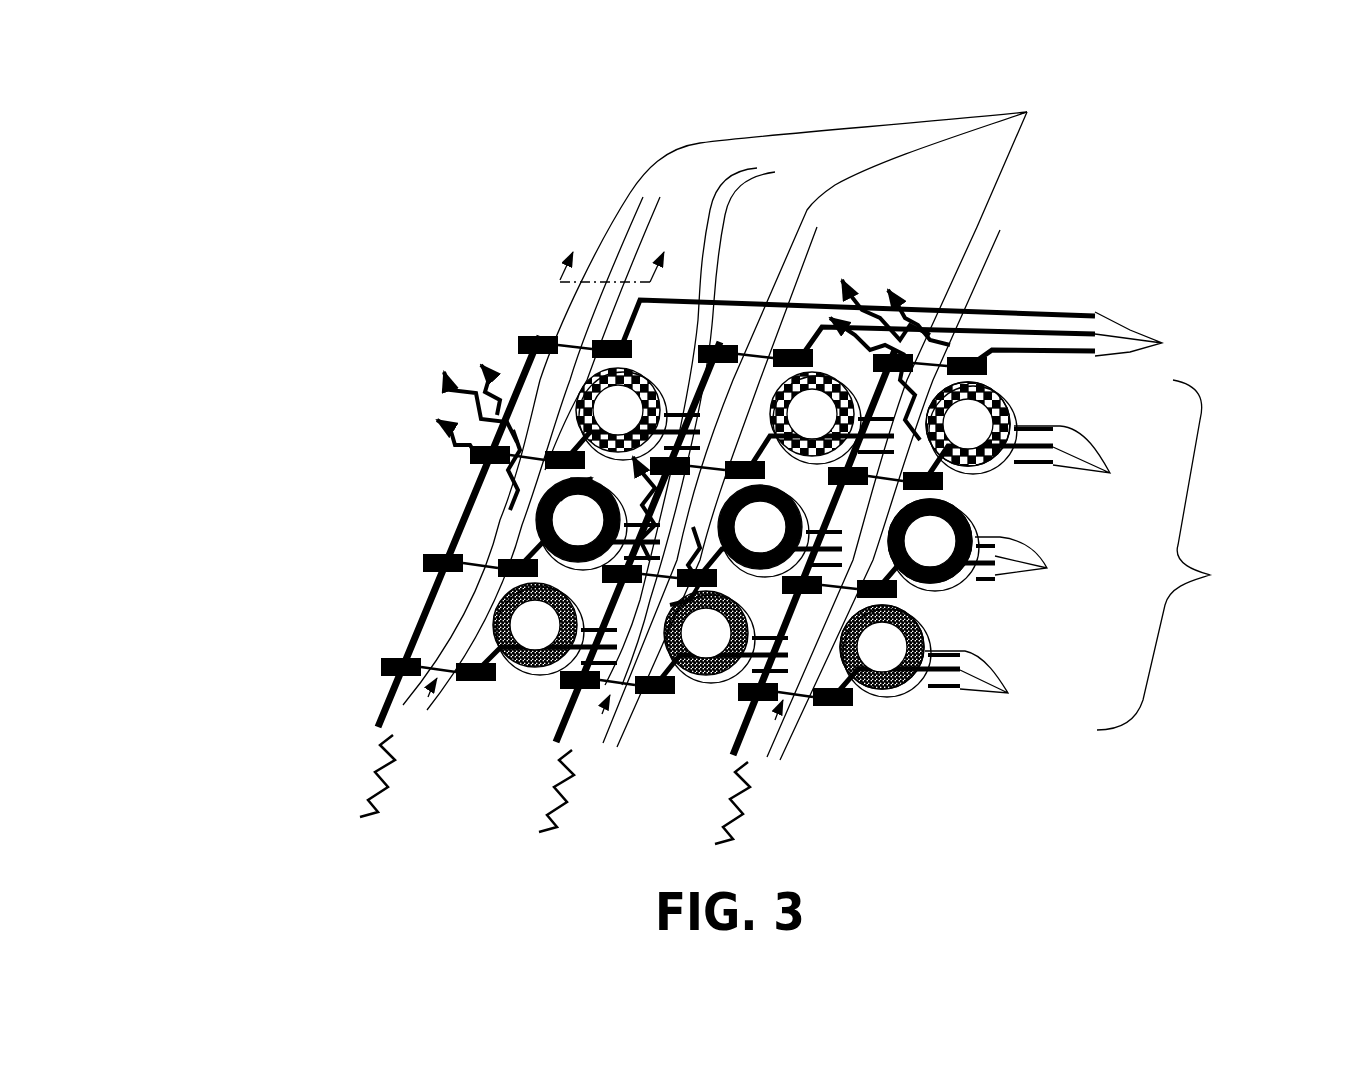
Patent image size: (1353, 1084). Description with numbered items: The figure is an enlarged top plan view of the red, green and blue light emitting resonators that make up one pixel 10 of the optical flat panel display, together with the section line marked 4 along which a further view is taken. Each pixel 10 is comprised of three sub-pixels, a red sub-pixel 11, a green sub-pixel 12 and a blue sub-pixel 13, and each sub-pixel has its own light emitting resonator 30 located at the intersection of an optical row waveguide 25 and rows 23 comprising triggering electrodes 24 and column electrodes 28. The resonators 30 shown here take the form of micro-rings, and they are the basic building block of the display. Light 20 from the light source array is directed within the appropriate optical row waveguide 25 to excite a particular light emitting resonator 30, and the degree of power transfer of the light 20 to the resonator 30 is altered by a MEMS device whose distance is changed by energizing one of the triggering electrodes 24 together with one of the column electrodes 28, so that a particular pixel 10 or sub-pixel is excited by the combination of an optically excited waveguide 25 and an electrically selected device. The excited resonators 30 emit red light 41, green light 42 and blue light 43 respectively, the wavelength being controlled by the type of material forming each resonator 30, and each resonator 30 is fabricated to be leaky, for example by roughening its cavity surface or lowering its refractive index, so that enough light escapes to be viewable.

The pixel 10 is at (1179, 555).
The red sub-pixel 11 is at (930, 607).
The green sub-pixel 12 is at (988, 527).
The blue sub-pixel 13 is at (1022, 405).
The light 20 is at (385, 762).
The rows 23 is at (825, 519).
The triggering electrodes 24 is at (222, 545).
The optical row waveguide 25 is at (1028, 112).
The column electrodes 28 is at (380, 717).
The light emitting resonator 30 is at (1015, 405).
The red light 41 is at (650, 602).
The green light 42 is at (433, 428).
The blue light 43 is at (873, 285).
The section line 4- 4 is at (625, 239).